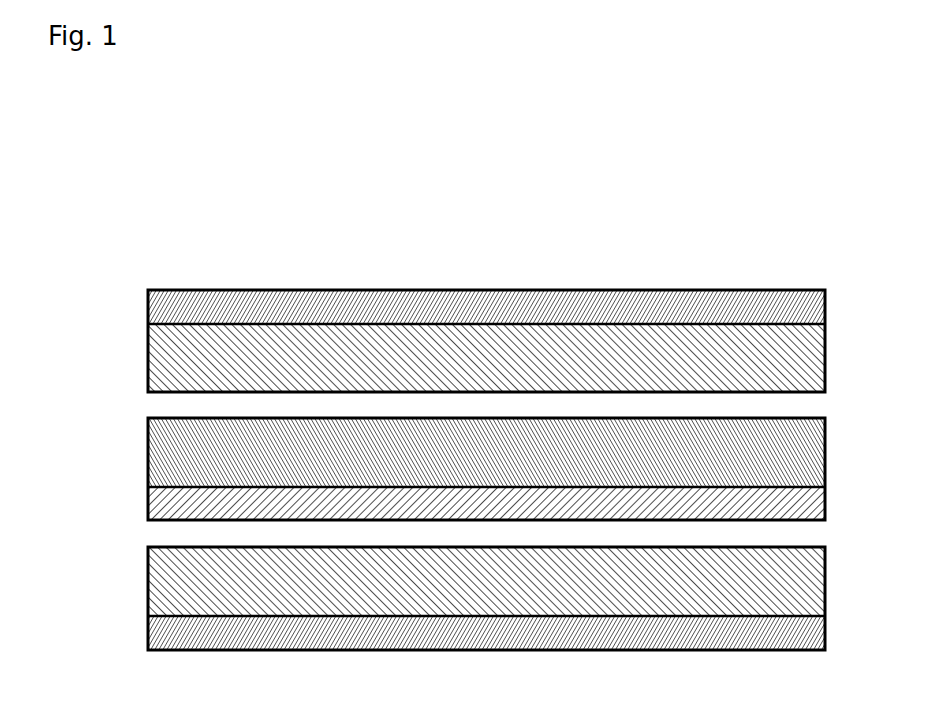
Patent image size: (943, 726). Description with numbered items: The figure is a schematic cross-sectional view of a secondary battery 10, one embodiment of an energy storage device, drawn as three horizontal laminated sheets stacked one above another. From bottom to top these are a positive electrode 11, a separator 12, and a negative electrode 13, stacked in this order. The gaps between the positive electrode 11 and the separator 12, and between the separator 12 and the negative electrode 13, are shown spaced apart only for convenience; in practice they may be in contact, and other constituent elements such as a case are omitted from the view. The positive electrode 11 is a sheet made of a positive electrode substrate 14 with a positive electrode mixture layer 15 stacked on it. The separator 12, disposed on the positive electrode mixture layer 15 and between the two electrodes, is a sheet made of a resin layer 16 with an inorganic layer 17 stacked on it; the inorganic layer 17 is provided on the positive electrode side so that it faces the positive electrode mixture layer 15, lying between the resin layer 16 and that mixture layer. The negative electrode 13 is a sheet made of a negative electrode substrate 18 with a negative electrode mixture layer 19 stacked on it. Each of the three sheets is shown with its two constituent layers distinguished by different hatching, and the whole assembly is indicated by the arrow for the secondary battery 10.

The secondary battery 10 is at (833, 218).
The positive electrode 11 is at (148, 600).
The separator 12 is at (148, 472).
The negative electrode 13 is at (148, 347).
The positive electrode substrate 14 is at (810, 630).
The positive electrode mixture layer 15 is at (810, 582).
The resin layer 16 is at (806, 456).
The inorganic layer 17 is at (808, 500).
The negative electrode substrate 18 is at (808, 313).
The negative electrode mixture layer 19 is at (808, 359).